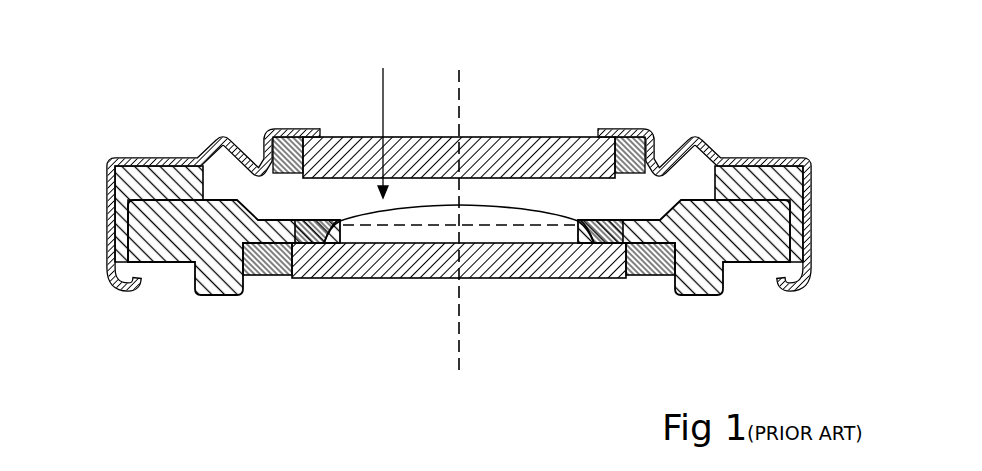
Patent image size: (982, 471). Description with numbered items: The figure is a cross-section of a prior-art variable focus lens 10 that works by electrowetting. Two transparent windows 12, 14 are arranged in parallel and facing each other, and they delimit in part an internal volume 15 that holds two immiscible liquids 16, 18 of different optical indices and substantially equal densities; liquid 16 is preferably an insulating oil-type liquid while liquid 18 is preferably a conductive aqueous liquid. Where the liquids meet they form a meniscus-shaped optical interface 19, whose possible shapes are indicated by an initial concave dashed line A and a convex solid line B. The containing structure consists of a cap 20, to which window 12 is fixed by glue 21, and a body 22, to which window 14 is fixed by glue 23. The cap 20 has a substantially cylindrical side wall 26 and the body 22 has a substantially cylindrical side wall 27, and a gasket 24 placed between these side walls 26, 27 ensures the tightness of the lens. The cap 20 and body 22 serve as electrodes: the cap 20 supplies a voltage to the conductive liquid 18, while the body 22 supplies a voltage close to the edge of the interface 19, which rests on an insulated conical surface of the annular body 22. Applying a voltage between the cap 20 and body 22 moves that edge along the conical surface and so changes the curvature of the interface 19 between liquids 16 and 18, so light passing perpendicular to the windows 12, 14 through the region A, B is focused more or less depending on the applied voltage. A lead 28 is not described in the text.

The variable focus lens 10 is at (716, 84).
The transparent window 12 is at (542, 137).
The transparent window 14 is at (545, 266).
The internal volume 15 is at (377, 118).
The liquid 16 is at (392, 232).
The liquid 18 is at (428, 192).
The optical interface 19 is at (348, 223).
The cap 20 is at (203, 145).
The glue 21 is at (293, 127).
The body 22 is at (689, 301).
The glue 23 is at (270, 275).
The gasket 24 is at (777, 157).
The side wall 26 is at (110, 190).
The side wall 27 is at (795, 237).
The gasket 28 is at (591, 240).
The line A is at (590, 222).
The line B is at (503, 208).